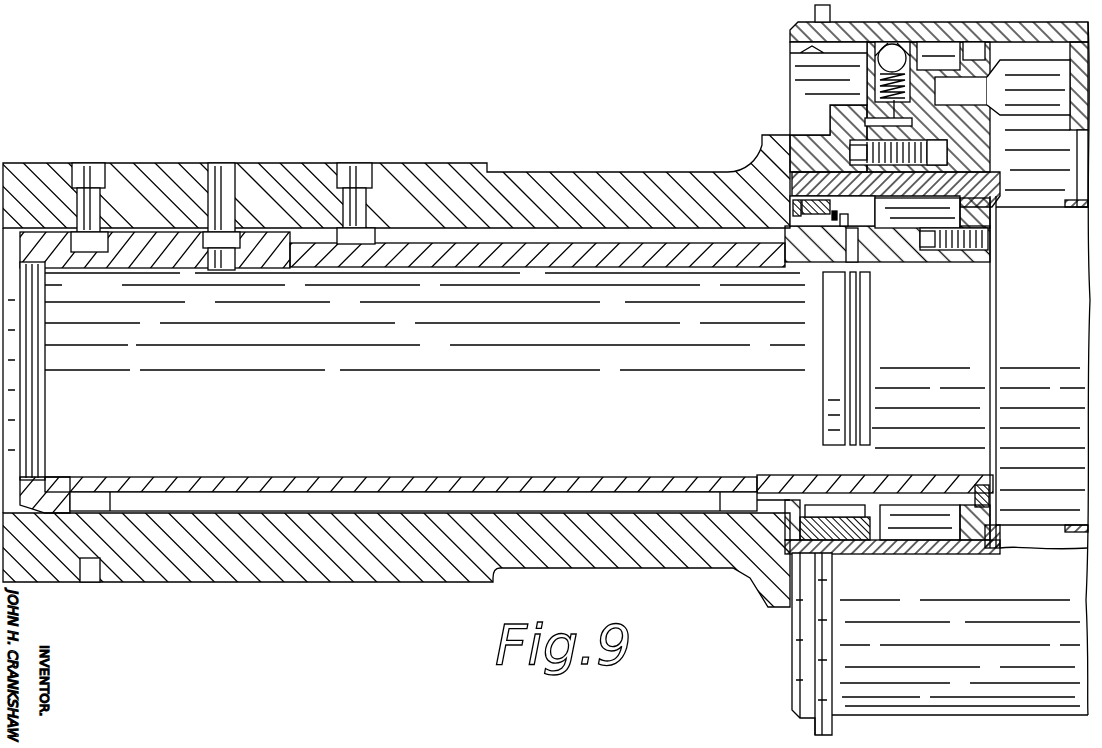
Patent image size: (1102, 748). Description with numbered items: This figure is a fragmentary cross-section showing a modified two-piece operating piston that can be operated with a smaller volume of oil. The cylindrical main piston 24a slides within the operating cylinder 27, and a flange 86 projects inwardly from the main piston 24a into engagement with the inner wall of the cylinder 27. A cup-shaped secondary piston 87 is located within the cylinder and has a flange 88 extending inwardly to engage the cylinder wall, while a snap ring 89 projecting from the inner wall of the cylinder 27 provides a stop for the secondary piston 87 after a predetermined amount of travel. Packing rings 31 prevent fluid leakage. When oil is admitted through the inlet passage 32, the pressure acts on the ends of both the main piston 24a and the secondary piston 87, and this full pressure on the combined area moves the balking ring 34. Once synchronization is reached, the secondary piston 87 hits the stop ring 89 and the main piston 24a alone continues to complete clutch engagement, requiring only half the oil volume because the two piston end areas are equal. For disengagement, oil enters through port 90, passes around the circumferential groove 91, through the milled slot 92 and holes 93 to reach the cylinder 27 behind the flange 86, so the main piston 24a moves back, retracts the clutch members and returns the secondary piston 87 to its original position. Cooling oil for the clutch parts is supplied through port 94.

The main piston 24a is at (828, 180).
The operating cylinder 27 is at (928, 228).
The packing rings 31 is at (868, 525).
The oil passage 32 is at (518, 242).
The balking ring 34 is at (975, 152).
The flange 86 is at (876, 206).
The secondary piston 87 is at (830, 228).
The flange 88 is at (797, 230).
The snap ring 89 is at (838, 220).
The port 90 is at (92, 186).
The circumferential groove 91 is at (90, 252).
The milled slot 92 is at (300, 490).
The holes 93 is at (968, 505).
The port 94 is at (226, 178).